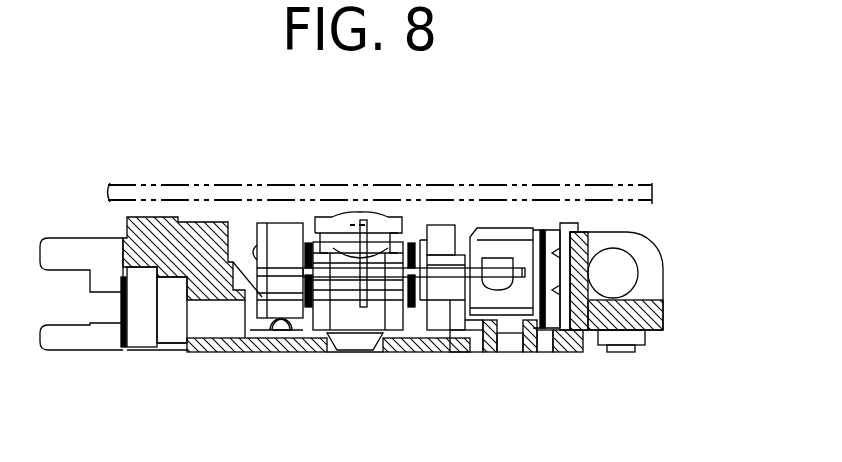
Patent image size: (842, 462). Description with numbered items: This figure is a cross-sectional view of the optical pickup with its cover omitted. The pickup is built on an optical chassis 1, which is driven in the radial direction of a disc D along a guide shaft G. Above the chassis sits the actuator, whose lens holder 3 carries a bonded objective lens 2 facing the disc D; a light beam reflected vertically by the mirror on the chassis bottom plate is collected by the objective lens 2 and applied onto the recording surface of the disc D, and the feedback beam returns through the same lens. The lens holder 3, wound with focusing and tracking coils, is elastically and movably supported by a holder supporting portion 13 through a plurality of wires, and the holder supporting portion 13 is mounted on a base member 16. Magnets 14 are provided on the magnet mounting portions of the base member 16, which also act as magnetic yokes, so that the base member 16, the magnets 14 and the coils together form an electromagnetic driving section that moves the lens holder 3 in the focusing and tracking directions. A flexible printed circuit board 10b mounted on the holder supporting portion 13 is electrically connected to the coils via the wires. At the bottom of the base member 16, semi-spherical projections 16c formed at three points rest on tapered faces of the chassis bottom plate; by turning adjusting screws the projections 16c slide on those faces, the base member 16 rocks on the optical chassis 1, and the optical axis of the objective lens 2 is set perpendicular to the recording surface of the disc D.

The optical chassis 1 is at (567, 340).
The objective lens 2 is at (353, 222).
The lens holder 3 is at (324, 315).
The holder supporting portion 13 is at (500, 245).
The magnets 14 is at (283, 232).
The base member 16 is at (500, 288).
The semi-spherical projections 16c is at (281, 330).
The flexible printed circuit board 10b is at (543, 230).
The disc D is at (638, 182).
The guide shaft G is at (640, 273).